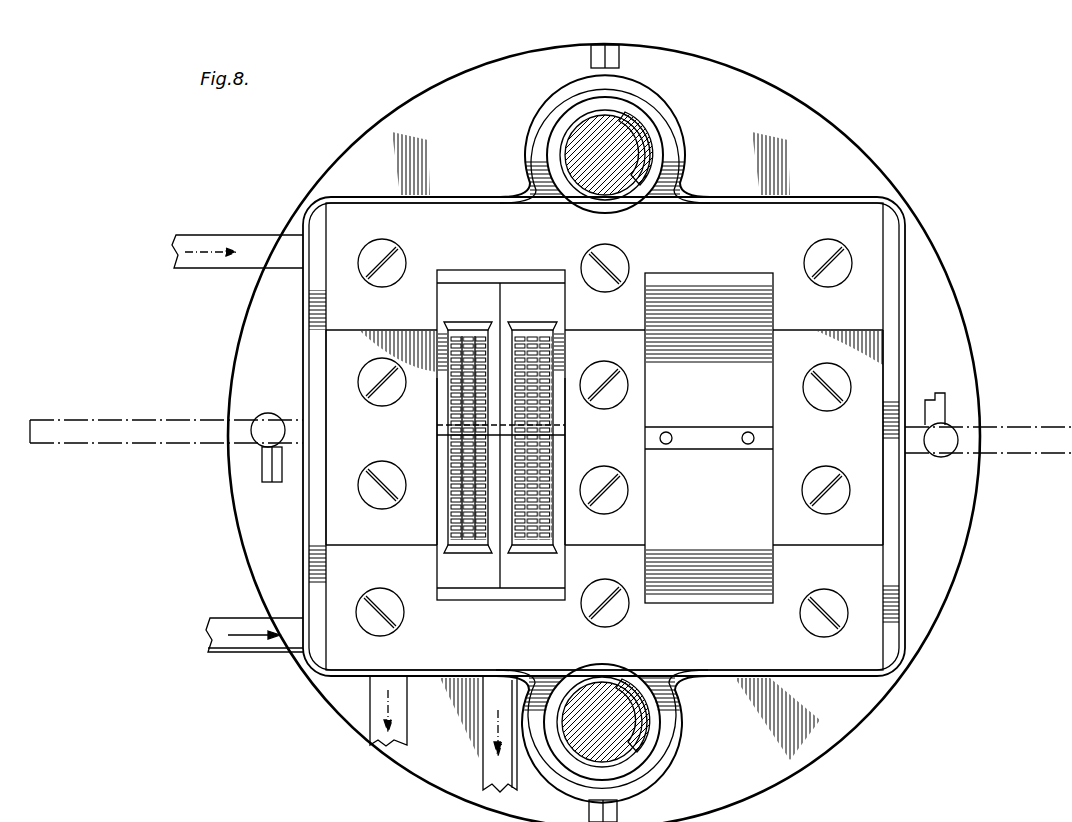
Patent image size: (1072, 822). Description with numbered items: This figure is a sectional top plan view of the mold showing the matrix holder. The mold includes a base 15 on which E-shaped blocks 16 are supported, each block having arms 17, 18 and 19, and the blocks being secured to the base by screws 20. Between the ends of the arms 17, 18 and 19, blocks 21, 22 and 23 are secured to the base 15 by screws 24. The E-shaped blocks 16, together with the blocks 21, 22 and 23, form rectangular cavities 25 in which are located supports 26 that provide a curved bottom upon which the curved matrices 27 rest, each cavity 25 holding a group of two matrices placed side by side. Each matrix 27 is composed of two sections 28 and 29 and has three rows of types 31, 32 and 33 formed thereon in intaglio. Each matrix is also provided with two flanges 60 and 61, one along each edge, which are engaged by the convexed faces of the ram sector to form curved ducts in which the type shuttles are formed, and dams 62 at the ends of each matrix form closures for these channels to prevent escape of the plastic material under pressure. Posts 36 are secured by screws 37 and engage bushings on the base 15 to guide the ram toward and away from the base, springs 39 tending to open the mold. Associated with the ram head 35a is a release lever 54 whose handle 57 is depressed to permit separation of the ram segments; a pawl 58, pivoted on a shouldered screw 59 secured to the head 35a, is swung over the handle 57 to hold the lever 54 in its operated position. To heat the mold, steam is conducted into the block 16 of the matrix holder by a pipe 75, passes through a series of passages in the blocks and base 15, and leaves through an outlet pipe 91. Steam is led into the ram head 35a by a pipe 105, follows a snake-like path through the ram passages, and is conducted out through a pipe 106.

The base 15 is at (872, 703).
The E-shaped block 16 is at (450, 206).
The arm 17 is at (350, 331).
The arm 18 is at (596, 331).
The arm 19 is at (870, 324).
The screw 20 is at (380, 254).
The block 21 is at (328, 372).
The block 22 is at (634, 452).
The block 23 is at (880, 522).
The screw 24 is at (368, 388).
The rectangular cavity 25 is at (440, 386).
The support 26 is at (516, 270).
The curved matrix 27 is at (412, 441).
The matrix section 28 is at (437, 306).
The matrix section 29 is at (440, 484).
The row of types 31 is at (456, 550).
The row of types 32 is at (468, 550).
The row of types 33 is at (480, 550).
The ram head 35a is at (375, 195).
The post 36 is at (640, 150).
The screw 37 is at (592, 62).
The spring 39 is at (643, 117).
The lever 54 is at (142, 416).
The handle 57 is at (90, 444).
The pawl 58 is at (290, 470).
The shouldered screw 59 is at (263, 452).
The flange 60 is at (437, 549).
The flange 61 is at (556, 551).
The dam 62 is at (520, 325).
The pipe 75 is at (222, 628).
The outlet pipe 91 is at (490, 742).
The pipe 105 is at (208, 236).
The pipe 106 is at (372, 688).